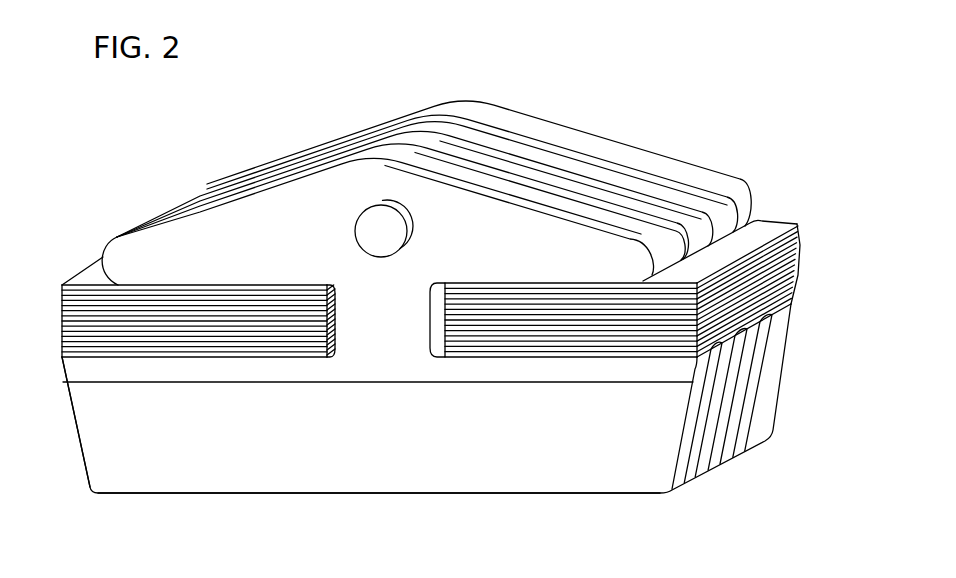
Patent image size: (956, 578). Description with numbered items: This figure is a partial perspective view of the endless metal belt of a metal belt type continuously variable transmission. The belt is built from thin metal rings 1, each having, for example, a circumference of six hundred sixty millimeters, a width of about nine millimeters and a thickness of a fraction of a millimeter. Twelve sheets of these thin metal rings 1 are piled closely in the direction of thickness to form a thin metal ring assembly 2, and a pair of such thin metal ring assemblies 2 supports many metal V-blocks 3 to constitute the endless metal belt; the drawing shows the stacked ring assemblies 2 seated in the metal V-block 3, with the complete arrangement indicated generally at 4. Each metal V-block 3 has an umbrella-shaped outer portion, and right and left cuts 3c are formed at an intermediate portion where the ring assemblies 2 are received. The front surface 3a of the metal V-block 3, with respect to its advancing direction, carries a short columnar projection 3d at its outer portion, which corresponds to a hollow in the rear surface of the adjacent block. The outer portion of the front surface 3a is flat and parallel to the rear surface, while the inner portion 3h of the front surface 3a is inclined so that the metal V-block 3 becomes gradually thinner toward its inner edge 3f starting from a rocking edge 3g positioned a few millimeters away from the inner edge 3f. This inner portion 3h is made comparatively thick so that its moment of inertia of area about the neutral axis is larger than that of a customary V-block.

The thin metal ring 1 is at (786, 289).
The thin metal ring assembly 2 is at (55, 288).
The metal V-block 3 is at (389, 285).
The front surface 3a is at (603, 471).
The cut 3c is at (176, 285).
The short columnar projection 3d is at (381, 224).
The inner edge 3f is at (412, 493).
The rocking edge 3g is at (155, 383).
The inner portion 3h is at (307, 450).
The leaf spring assembly 4 is at (389, 245).